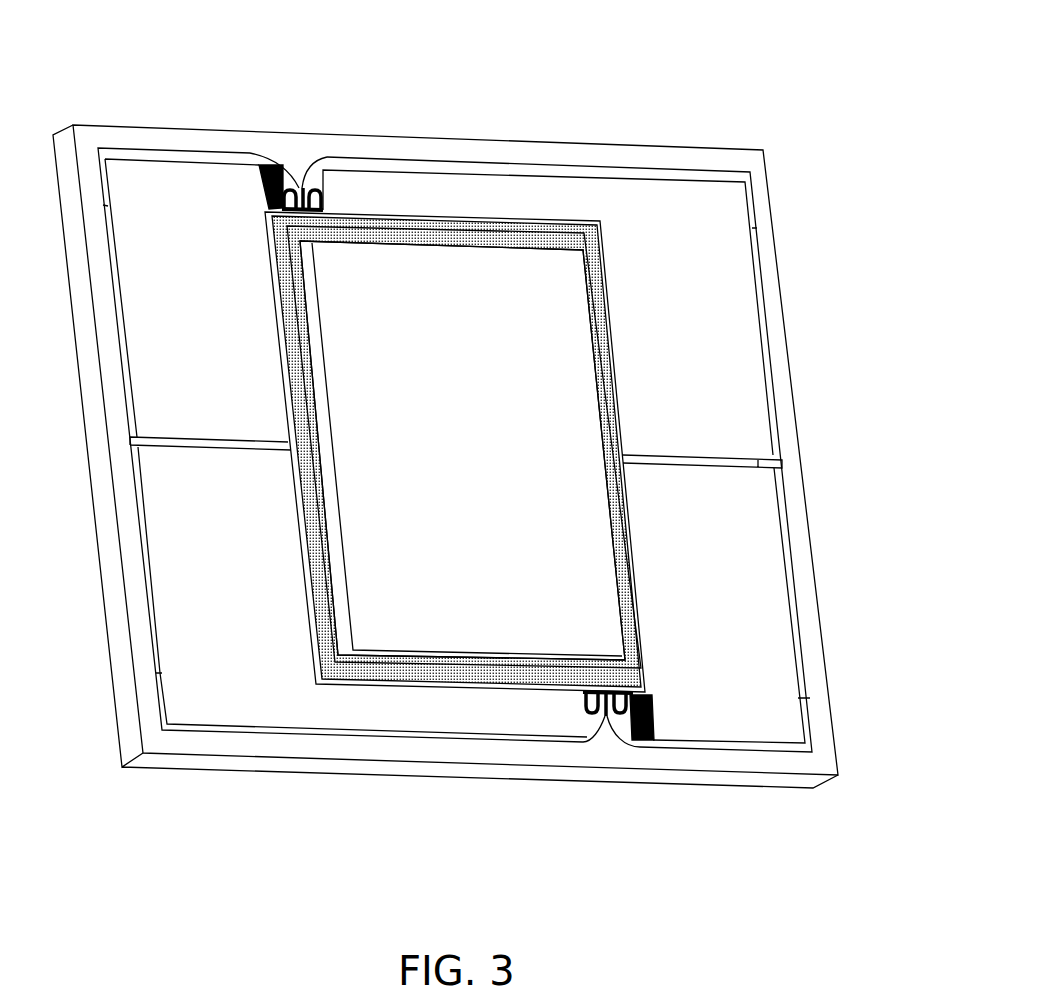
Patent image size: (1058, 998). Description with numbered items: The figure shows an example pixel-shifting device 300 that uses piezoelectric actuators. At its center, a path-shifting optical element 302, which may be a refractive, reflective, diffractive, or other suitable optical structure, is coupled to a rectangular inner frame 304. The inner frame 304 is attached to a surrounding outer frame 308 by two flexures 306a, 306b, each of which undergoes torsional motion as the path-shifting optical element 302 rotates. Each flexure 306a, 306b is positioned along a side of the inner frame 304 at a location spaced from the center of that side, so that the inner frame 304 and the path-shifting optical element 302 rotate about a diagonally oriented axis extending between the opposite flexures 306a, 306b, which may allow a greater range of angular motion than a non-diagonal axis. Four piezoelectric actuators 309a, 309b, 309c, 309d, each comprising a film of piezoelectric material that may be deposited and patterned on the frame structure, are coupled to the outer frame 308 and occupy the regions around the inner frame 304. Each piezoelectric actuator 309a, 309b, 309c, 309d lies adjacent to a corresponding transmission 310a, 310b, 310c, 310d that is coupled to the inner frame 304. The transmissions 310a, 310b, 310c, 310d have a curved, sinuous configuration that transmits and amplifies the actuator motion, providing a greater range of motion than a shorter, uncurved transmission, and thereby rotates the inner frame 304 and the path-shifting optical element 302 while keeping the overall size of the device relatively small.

The pixel-shifting device 300 is at (765, 37).
The path-shifting optical element 302 is at (573, 226).
The inner frame 304 is at (282, 322).
The flexure 306a is at (304, 190).
The flexure 306b is at (606, 714).
The outer frame 308 is at (697, 147).
The piezoelectric actuator 309a is at (162, 189).
The piezoelectric actuator 309b is at (743, 212).
The piezoelectric actuator 309c is at (218, 715).
The piezoelectric actuator 309d is at (797, 736).
The transmission 310a is at (291, 187).
The transmission 310b is at (322, 197).
The transmission 310c is at (588, 708).
The transmission 310d is at (622, 717).